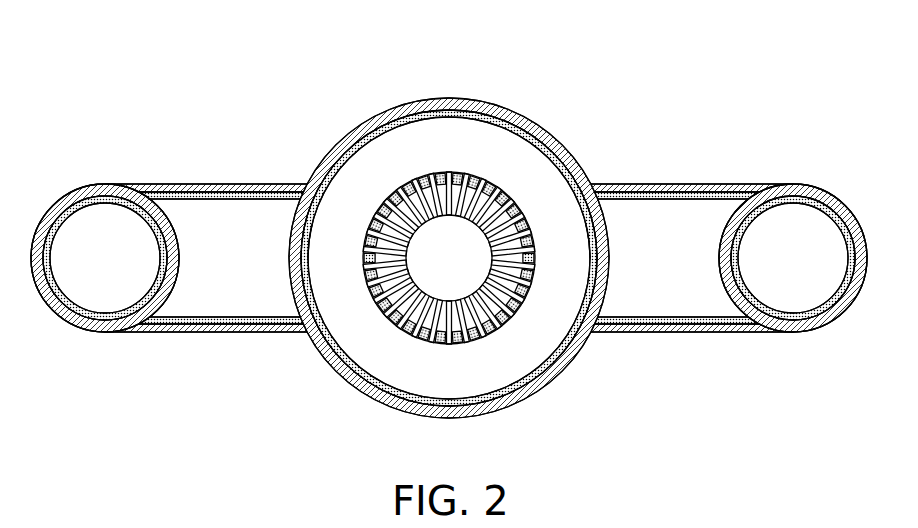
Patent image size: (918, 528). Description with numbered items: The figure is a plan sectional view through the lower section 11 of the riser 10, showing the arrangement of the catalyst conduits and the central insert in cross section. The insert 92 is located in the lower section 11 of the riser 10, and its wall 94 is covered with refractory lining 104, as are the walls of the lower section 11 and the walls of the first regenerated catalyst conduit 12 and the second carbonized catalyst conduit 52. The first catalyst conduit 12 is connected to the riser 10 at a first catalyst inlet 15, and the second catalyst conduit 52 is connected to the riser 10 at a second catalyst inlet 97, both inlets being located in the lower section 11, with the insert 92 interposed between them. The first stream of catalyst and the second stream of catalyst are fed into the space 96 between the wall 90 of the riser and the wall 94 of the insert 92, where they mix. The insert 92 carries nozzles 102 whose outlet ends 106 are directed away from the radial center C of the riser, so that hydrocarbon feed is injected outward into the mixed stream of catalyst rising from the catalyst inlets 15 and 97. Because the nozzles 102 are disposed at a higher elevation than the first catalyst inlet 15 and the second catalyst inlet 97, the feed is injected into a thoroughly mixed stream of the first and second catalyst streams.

The riser 10 is at (455, 88).
The lower section of the riser 11 is at (378, 130).
The first regenerated catalyst conduit 12 is at (180, 329).
The first catalyst inlet 15 is at (312, 255).
The second carbonized catalyst conduit 52 is at (740, 186).
The wall of the riser 90 is at (466, 418).
The insert 92 is at (457, 317).
The wall of the insert 94 is at (362, 259).
The space 96 is at (357, 188).
The second catalyst inlet 97 is at (589, 257).
The nozzles 102 is at (428, 348).
The refractory lining 104 is at (210, 195).
The outlet ends 106 is at (393, 326).
The radial center of the riser C is at (448, 258).